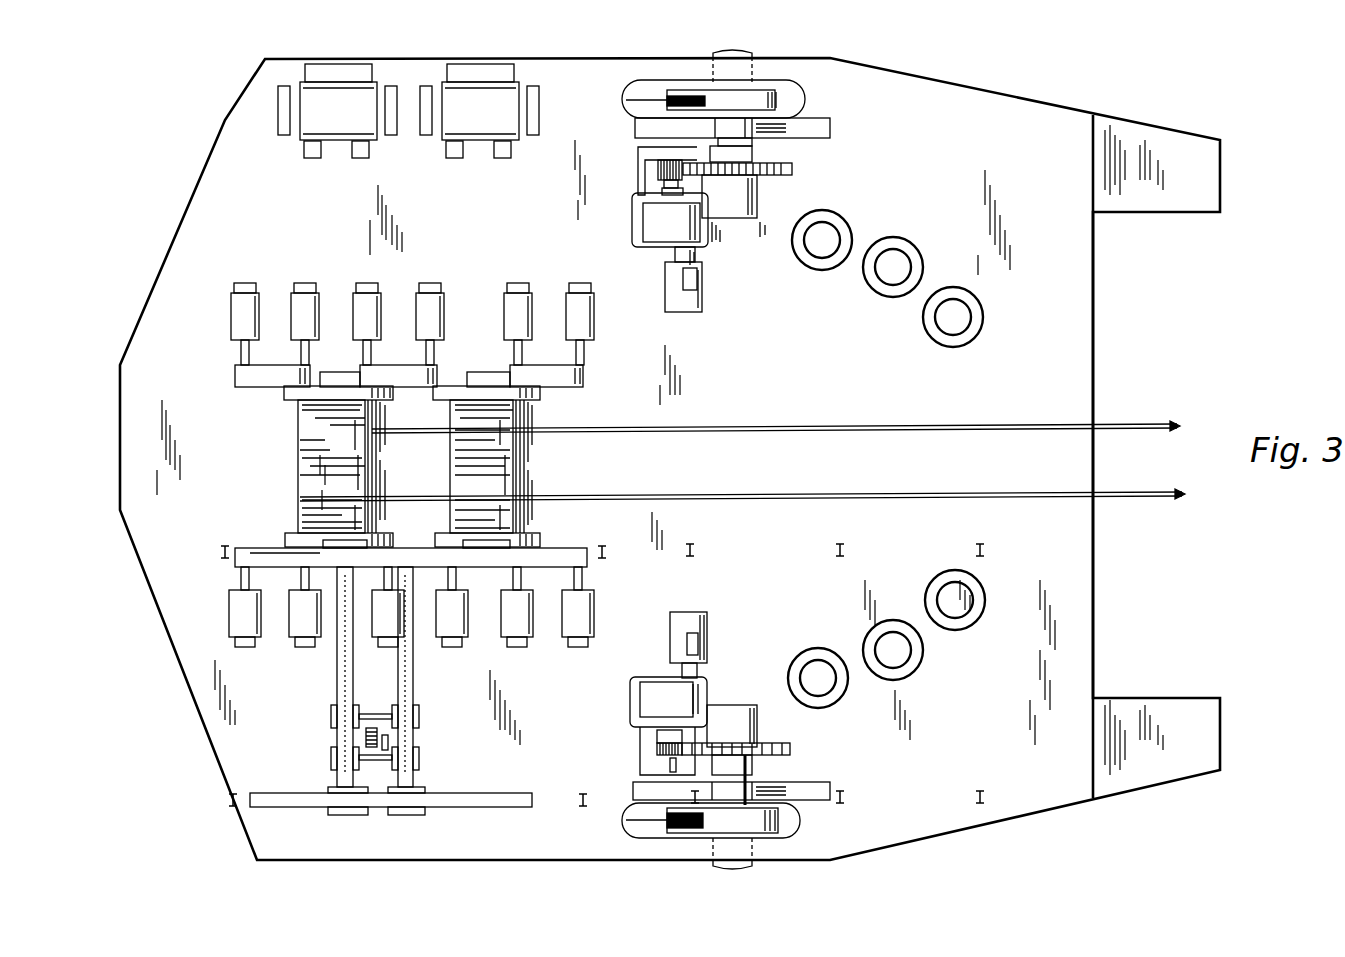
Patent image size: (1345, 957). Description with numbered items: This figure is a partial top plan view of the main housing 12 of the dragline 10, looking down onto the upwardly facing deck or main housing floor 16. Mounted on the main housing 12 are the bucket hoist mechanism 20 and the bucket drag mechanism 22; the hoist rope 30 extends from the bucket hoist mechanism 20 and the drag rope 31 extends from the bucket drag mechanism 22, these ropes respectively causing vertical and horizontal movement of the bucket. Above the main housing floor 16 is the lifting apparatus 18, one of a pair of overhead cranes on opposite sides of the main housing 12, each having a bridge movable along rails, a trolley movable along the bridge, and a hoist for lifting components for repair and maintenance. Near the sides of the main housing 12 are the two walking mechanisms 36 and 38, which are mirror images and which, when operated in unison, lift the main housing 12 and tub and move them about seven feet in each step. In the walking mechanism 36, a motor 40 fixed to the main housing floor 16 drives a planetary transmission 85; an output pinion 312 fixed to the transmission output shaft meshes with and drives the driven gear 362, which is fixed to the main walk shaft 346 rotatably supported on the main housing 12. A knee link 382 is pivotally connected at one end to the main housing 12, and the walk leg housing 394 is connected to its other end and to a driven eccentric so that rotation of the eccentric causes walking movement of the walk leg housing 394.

The dragline 10 is at (1190, 256).
The main housing 12 is at (1063, 325).
The main housing floor 16 is at (815, 366).
The lifting apparatus 18 is at (340, 676).
The bucket hoist mechanism 20 is at (300, 467).
The bucket drag mechanism 22 is at (520, 464).
The hoist rope 30 is at (701, 496).
The drag rope 31 is at (784, 428).
The walking mechanism 36 is at (740, 642).
The walking mechanism 38 is at (731, 227).
The motor 40 is at (670, 617).
The planetary transmission 85 is at (646, 694).
The output pinion 312 is at (657, 750).
The main walk shaft 346 is at (750, 785).
The driven gear 362 is at (781, 746).
The knee link 382 is at (624, 820).
The walk leg housing 394 is at (778, 821).